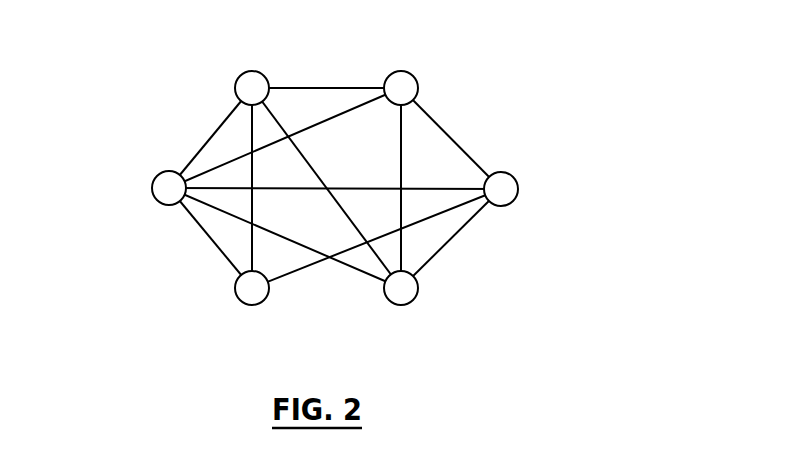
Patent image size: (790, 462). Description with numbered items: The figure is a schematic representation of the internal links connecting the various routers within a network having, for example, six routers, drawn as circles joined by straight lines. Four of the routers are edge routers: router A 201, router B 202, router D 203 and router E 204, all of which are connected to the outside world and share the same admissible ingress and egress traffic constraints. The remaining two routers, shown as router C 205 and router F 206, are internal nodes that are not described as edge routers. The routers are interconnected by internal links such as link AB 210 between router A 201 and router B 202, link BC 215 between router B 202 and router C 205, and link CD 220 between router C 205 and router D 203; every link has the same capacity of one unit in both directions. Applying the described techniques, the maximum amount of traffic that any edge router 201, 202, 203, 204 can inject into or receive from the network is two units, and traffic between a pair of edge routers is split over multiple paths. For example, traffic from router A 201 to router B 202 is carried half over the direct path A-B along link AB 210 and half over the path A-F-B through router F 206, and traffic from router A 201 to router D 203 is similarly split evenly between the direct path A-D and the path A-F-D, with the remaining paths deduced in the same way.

The router A 201 is at (248, 74).
The router B 202 is at (408, 73).
The router D 203 is at (402, 305).
The router E 204 is at (252, 304).
The node C 205 is at (535, 189).
The node F 206 is at (135, 188).
The link AB 210 is at (326, 73).
The link BC 215 is at (451, 138).
The link CD 220 is at (451, 238).